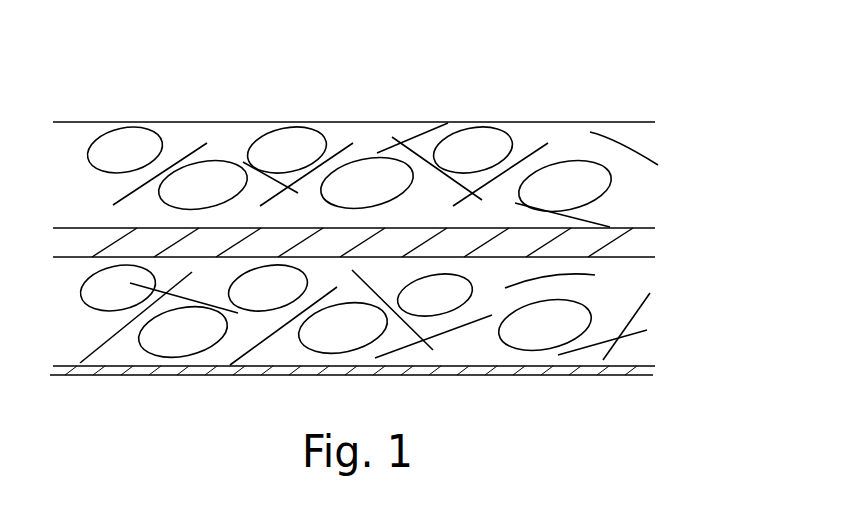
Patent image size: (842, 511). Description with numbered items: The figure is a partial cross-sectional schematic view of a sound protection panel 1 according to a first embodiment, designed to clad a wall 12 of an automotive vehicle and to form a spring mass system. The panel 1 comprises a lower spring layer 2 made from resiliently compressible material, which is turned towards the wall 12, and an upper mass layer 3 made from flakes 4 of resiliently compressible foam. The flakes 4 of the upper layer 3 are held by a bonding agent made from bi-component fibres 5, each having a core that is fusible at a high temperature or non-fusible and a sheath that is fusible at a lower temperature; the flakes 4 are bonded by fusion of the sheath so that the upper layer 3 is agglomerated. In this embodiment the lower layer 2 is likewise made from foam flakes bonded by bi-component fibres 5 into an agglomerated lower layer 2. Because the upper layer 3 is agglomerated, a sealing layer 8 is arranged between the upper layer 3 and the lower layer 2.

The sound protection panel 1 is at (604, 100).
The lower spring layer 2 is at (665, 313).
The upper mass layer 3 is at (690, 152).
The flakes 4 is at (596, 188).
The bi-component fibres 5 is at (533, 142).
The sealing layer 8 is at (665, 252).
The wall 12 is at (651, 375).